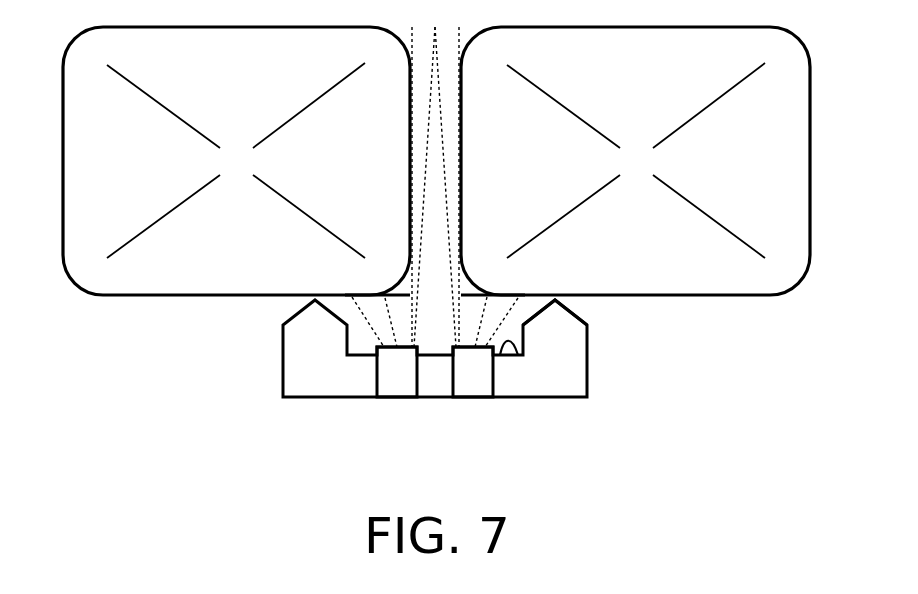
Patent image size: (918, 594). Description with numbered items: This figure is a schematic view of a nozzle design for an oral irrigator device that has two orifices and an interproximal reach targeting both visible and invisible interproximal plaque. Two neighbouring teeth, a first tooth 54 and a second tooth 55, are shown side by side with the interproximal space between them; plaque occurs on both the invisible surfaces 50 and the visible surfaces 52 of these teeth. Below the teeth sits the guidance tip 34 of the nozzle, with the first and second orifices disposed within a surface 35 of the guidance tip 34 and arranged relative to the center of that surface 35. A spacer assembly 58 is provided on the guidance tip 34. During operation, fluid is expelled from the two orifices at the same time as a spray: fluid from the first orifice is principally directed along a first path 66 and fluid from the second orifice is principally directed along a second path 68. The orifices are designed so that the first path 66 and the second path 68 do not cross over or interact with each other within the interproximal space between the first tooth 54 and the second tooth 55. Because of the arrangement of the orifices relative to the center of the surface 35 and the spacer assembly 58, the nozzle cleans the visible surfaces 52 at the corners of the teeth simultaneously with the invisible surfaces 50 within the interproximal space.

The guidance tip 34 is at (567, 383).
The surface of the guidance tip 35 is at (515, 350).
The invisible surfaces 50 is at (412, 163).
The visible surfaces 52 is at (375, 295).
The first tooth 54 is at (649, 75).
The second tooth 55 is at (249, 75).
The spacer assembly 58 is at (573, 305).
The first path 66 is at (407, 334).
The second path 68 is at (491, 334).